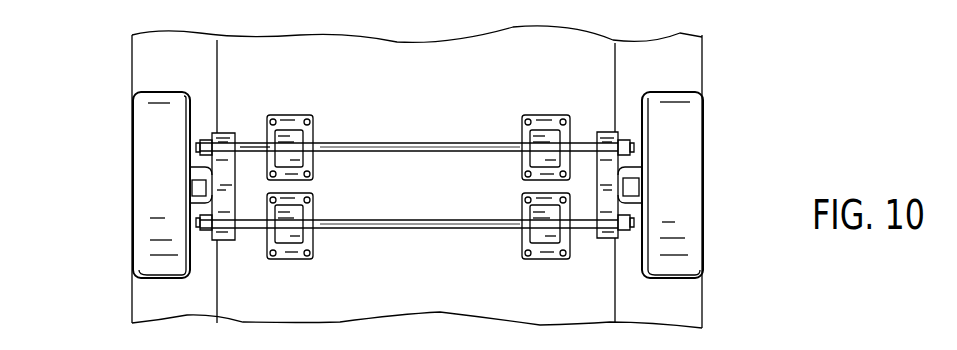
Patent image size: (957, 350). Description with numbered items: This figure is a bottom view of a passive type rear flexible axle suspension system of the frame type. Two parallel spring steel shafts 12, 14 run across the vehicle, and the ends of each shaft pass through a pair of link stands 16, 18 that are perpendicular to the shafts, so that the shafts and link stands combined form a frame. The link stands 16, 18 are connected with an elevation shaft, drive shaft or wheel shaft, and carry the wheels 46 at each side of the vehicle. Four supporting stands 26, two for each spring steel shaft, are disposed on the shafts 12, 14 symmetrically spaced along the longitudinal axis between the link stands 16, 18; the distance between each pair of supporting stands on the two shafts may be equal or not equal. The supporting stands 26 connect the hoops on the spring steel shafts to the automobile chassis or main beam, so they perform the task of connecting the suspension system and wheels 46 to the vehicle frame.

The spring steel shaft 12 is at (367, 228).
The spring steel shaft 14 is at (487, 143).
The link stand 16 is at (220, 198).
The link stand 18 is at (612, 210).
The supporting stand 26 is at (283, 263).
The wheel 46 is at (148, 218).